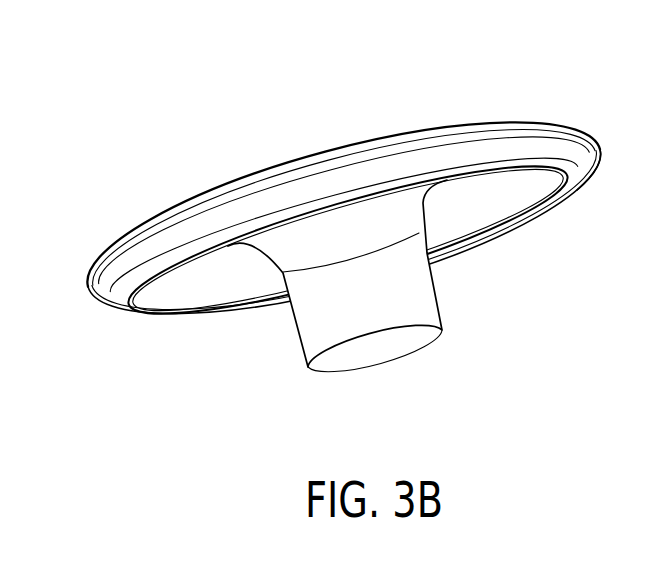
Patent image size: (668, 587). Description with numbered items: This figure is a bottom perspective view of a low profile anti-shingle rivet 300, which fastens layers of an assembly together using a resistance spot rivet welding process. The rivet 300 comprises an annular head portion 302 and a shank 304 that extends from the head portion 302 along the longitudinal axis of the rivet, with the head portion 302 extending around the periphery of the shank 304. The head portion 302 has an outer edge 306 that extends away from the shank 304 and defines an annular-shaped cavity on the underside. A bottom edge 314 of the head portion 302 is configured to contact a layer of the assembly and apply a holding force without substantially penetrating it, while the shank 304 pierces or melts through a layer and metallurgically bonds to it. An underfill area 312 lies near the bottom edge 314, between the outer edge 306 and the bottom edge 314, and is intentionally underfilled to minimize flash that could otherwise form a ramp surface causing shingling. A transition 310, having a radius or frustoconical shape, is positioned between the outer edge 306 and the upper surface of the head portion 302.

The anti-shingle rivet 300 is at (349, 201).
The head portion 302 is at (460, 125).
The shank 304 is at (313, 325).
The outer edge 306 is at (137, 252).
The transition 310 is at (165, 214).
The underfill area 312 is at (601, 171).
The bottom edge 314 is at (577, 180).